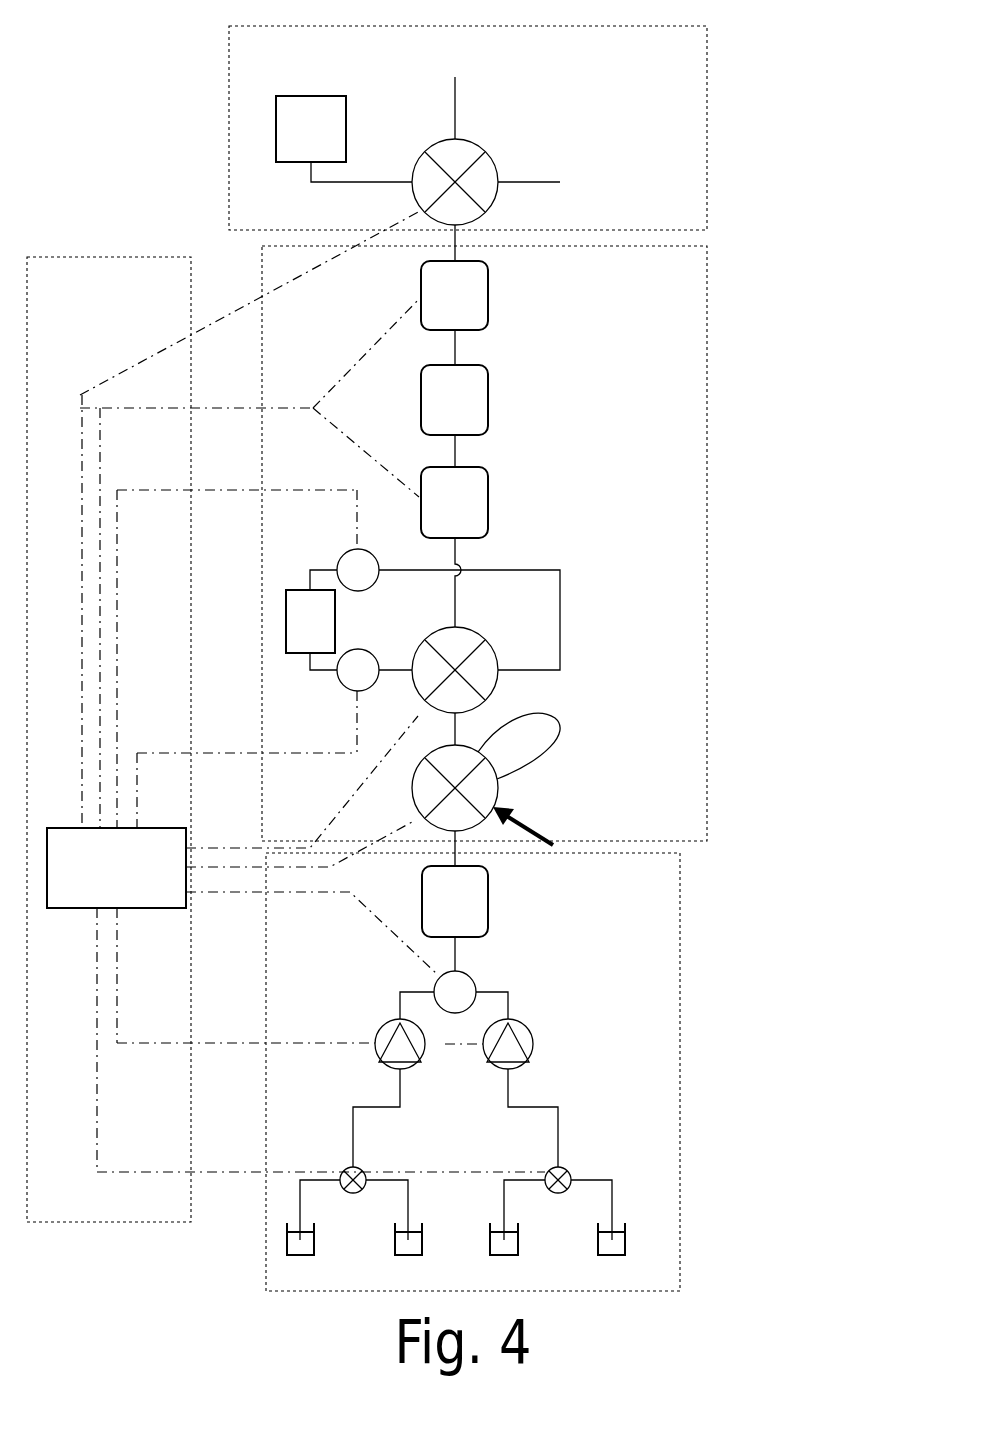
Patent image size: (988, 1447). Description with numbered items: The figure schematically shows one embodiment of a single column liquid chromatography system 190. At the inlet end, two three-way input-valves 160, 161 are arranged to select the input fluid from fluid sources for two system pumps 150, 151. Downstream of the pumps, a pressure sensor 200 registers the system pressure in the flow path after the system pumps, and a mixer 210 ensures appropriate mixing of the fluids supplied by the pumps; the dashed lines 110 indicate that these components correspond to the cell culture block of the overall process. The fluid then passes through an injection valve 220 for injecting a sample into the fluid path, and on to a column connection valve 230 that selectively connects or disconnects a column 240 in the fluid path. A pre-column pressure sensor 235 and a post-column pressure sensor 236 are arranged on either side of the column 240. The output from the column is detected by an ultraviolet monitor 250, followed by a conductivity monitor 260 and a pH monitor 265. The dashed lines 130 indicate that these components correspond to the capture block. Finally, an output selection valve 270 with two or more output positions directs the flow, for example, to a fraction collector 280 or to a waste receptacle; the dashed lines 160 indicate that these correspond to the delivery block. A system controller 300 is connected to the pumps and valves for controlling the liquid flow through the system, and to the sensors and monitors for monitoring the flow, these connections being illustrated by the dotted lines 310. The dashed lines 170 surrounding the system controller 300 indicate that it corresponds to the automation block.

The chromatography system 190 is at (112, 47).
The 3-way input-valve / dashed lines 160 is at (707, 120).
The output selection valve 270 is at (503, 130).
The fraction collector 280 is at (270, 122).
The pH monitor 265 is at (516, 292).
The conductivity monitor 260 is at (516, 396).
The ultraviolet (UV) monitor 250 is at (508, 490).
The post-column pressure sensor 236 is at (334, 554).
The column 240 is at (249, 622).
The pre-column pressure sensor 235 is at (334, 680).
The column connection valve 230 is at (532, 686).
The injection valve 220 is at (574, 788).
The dashed lines 130 is at (707, 580).
The mixer 210 is at (522, 900).
The pressure sensor 200 is at (486, 968).
The system pump 150 is at (372, 1016).
The system pump 151 is at (565, 1015).
The 3-way input-valve 161 is at (577, 1152).
The dashed lines 110 is at (680, 1028).
The dashed lines 170 is at (165, 1222).
The system controller 300 is at (174, 914).
The dotted lines 310 is at (150, 783).